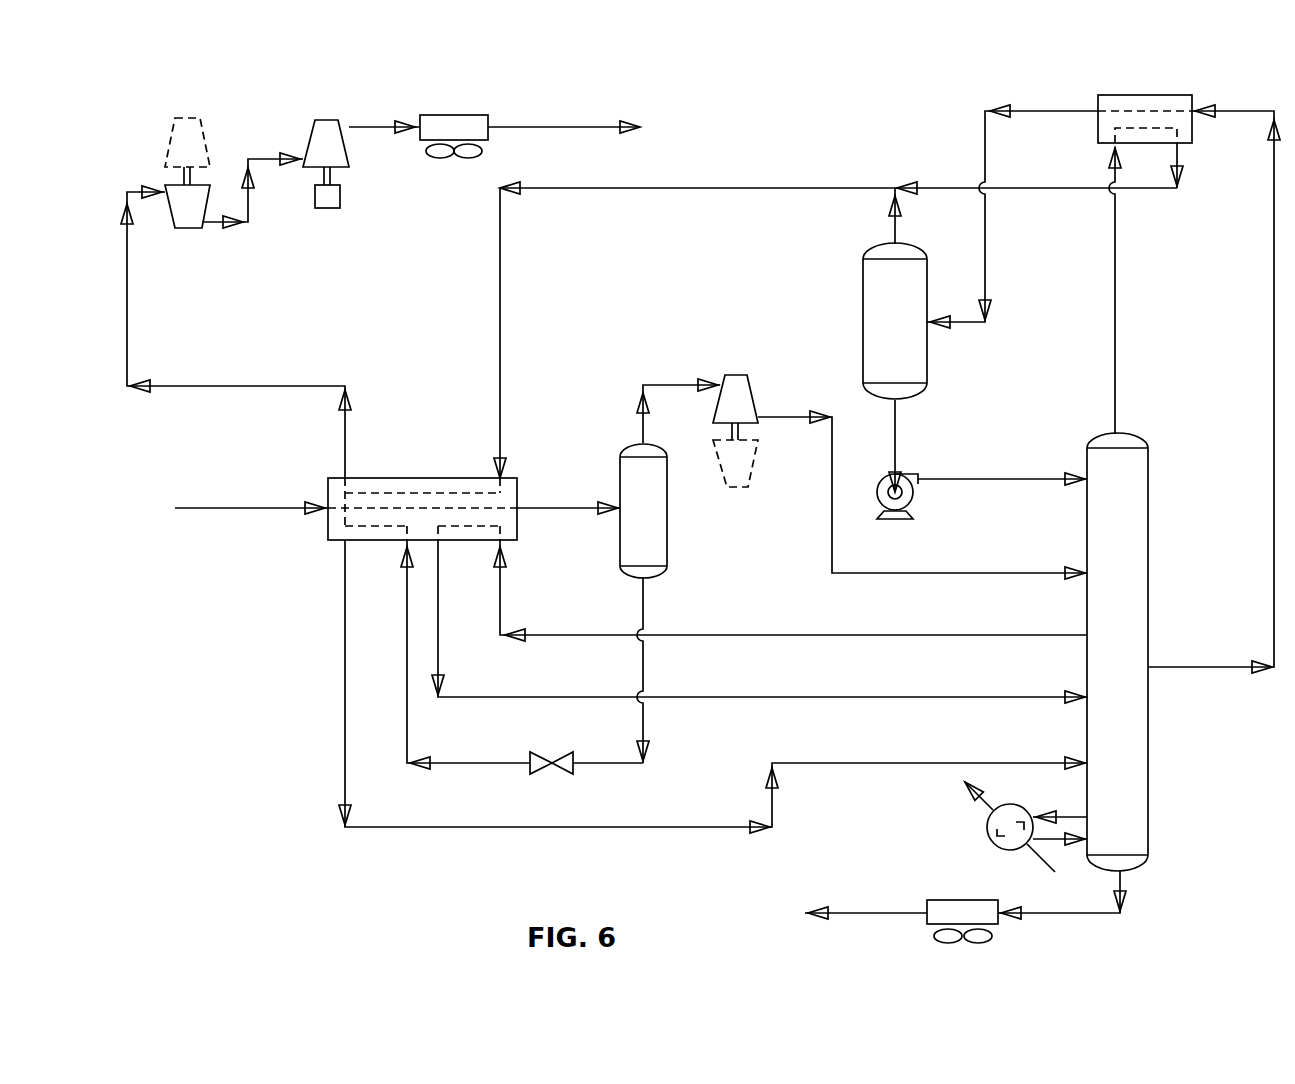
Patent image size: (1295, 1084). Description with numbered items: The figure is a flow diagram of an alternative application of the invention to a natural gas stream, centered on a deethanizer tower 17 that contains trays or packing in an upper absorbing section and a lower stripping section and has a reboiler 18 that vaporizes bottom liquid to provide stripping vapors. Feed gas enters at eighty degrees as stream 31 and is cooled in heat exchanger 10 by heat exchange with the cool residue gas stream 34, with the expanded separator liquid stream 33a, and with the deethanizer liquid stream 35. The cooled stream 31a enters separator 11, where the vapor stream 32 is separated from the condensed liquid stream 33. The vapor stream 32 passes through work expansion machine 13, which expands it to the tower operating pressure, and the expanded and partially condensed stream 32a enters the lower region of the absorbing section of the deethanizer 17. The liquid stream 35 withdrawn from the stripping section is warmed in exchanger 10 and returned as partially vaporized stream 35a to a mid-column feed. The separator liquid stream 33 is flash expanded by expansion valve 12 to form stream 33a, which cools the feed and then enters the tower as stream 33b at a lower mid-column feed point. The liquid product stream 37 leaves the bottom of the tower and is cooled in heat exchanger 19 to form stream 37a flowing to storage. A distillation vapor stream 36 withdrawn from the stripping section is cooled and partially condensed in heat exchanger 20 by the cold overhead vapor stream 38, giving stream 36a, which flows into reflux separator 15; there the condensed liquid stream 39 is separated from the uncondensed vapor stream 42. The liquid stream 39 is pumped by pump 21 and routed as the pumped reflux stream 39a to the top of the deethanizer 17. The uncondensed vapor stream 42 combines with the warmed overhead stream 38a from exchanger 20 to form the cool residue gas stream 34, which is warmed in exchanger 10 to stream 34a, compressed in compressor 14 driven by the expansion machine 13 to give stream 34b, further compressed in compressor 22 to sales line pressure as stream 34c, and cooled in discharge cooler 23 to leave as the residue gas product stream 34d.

The heat exchanger 10 is at (424, 477).
The separator 11 is at (667, 541).
The expansion valve 12 is at (542, 755).
The work expansion machine 13 is at (187, 122).
The compressor 14 is at (187, 228).
The reflux separator 15 is at (861, 325).
The deethanizer tower 17 is at (1149, 606).
The reboiler 18 is at (983, 830).
The heat exchanger 19 is at (962, 900).
The heat exchanger 20 is at (1145, 145).
The pump 21 is at (879, 513).
The compressor 22 is at (327, 120).
The discharge cooler 23 is at (455, 115).
The feed gas stream 31 is at (190, 508).
The cooled feed stream 31a is at (565, 511).
The vapor stream 32 is at (673, 388).
The expanded stream 32a is at (960, 575).
The separator liquid stream 33 is at (645, 605).
The expanded liquid stream 33a is at (480, 766).
The warmed liquid stream 33b is at (866, 766).
The cool residue gas stream 34 is at (702, 190).
The warmed residue gas stream 34a is at (220, 388).
The first-stage compressed residue gas stream 34b is at (249, 198).
The compressed residue gas stream 34c is at (372, 127).
The residue gas product stream 34d is at (606, 126).
The liquid stream 35 is at (770, 638).
The heated liquid stream 35a is at (960, 700).
The distillation vapor stream 36 is at (1240, 114).
The cooled distillation vapor stream 36a is at (1050, 114).
The liquid product stream 37 is at (1075, 916).
The cooled liquid product stream 37a is at (866, 916).
The deethanizer overhead vapor stream 38 is at (1112, 385).
The warmed deethanizer overhead stream 38a is at (1050, 190).
The condensed liquid stream 39 is at (892, 441).
The pumped liquid stream 39a is at (990, 481).
The uncondensed vapor stream 42 is at (890, 229).